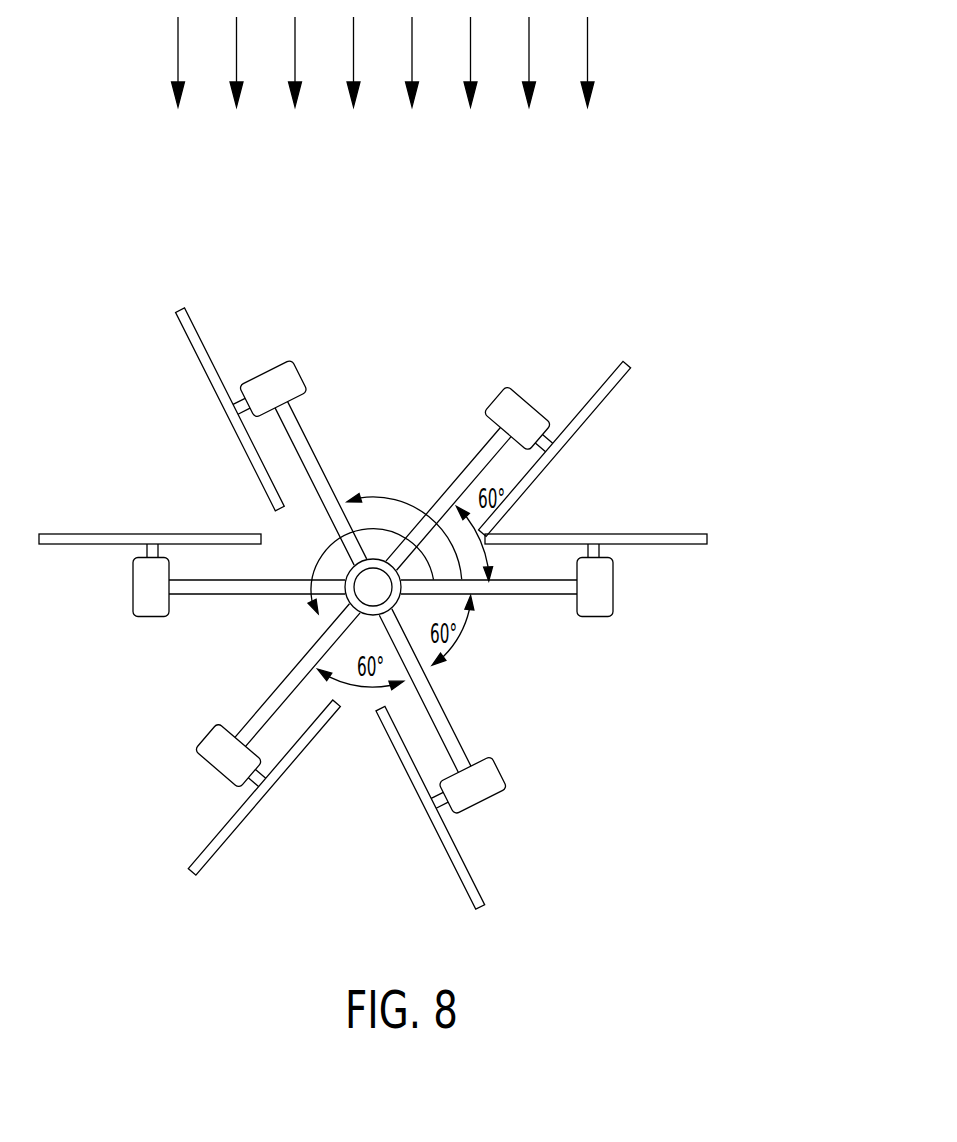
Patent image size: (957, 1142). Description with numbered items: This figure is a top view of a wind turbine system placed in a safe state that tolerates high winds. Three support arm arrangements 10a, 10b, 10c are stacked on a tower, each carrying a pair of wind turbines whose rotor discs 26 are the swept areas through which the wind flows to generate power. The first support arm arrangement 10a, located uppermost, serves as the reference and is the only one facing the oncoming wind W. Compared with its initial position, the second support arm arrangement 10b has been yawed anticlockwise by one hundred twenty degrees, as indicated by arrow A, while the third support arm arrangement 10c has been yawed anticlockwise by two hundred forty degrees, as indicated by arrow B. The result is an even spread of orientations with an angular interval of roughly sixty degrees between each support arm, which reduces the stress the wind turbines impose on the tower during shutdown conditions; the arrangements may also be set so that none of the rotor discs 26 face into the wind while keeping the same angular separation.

The rotor disc 26 is at (473, 872).
The first support arm arrangement 10a is at (706, 593).
The second support arm arrangement 10b is at (305, 345).
The third support arm arrangement 10c is at (162, 832).
The oncoming wind W is at (400, 62).
The arrow A is at (394, 498).
The arrow B is at (310, 603).